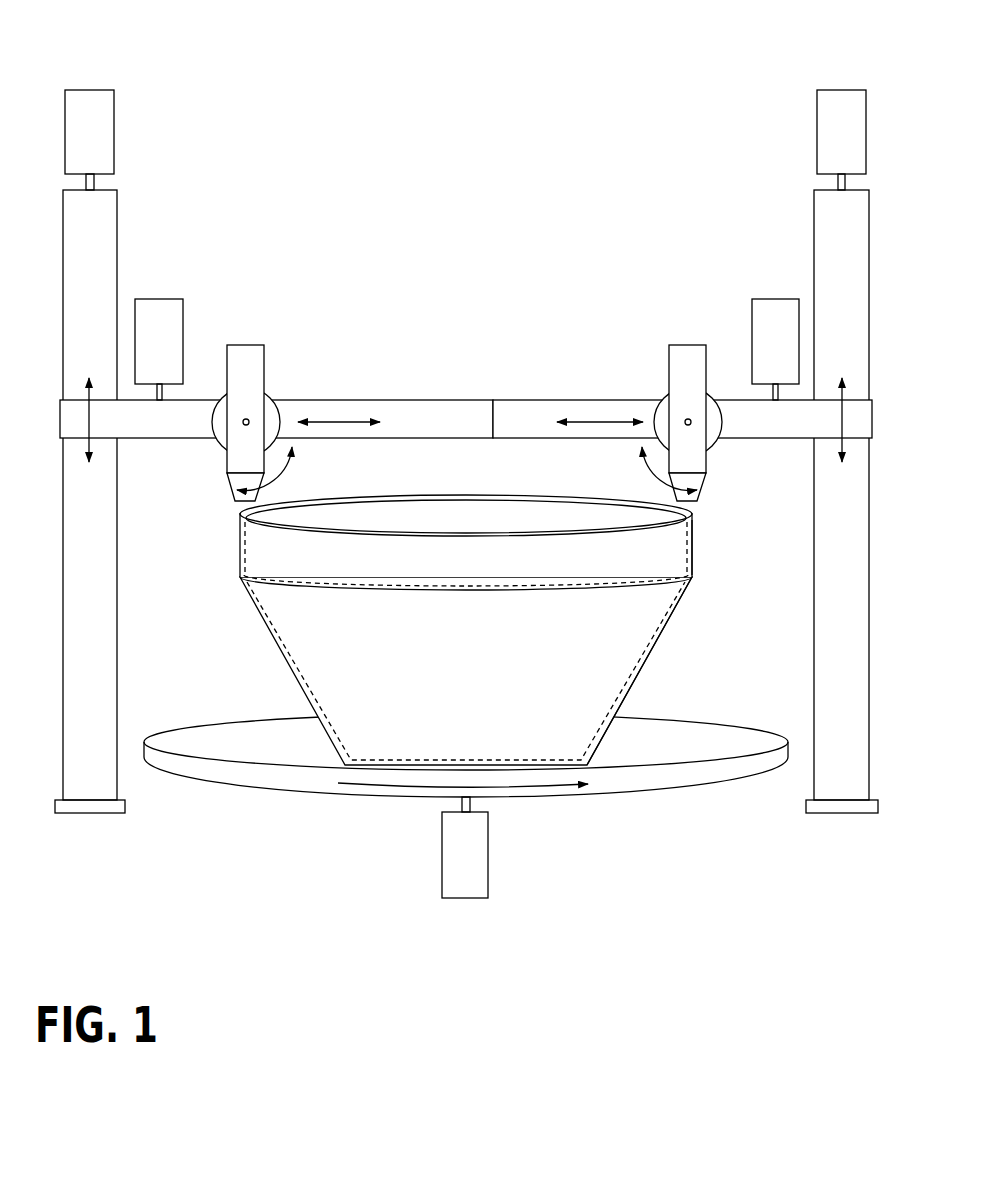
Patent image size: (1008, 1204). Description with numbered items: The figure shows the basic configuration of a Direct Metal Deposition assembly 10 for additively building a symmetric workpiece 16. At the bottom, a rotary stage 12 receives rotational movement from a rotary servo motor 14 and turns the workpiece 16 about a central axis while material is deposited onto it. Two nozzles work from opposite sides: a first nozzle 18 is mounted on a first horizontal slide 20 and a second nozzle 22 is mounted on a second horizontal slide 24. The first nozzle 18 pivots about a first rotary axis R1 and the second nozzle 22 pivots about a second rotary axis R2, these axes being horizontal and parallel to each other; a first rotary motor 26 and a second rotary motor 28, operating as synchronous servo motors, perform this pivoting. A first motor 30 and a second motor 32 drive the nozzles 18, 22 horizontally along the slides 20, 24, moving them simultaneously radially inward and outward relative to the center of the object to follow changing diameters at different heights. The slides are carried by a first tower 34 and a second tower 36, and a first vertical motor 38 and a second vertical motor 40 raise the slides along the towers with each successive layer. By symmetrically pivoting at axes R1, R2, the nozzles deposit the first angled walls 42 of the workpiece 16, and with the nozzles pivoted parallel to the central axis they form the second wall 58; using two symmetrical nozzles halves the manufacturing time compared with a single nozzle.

The Direct Metal Deposition assembly 10 is at (555, 110).
The rotary stage 12 is at (674, 756).
The rotary servo motor 14 is at (469, 864).
The workpiece 16 is at (472, 682).
The first nozzle 18 is at (225, 478).
The first horizontal slide 20 is at (429, 400).
The second nozzle 22 is at (710, 481).
The second horizontal slide 24 is at (540, 400).
The first rotary motor 26 is at (247, 340).
The second rotary motor 28 is at (686, 340).
The first motor 30 is at (163, 350).
The second motor 32 is at (779, 350).
The first tower 34 is at (83, 507).
The second tower 36 is at (857, 300).
The first vertical motor 38 is at (114, 128).
The second vertical motor 40 is at (817, 128).
The first angled wall 42 is at (650, 651).
The second wall 58 is at (694, 543).
The first rotary axis R1 is at (243, 420).
The second rotary axis R2 is at (691, 420).